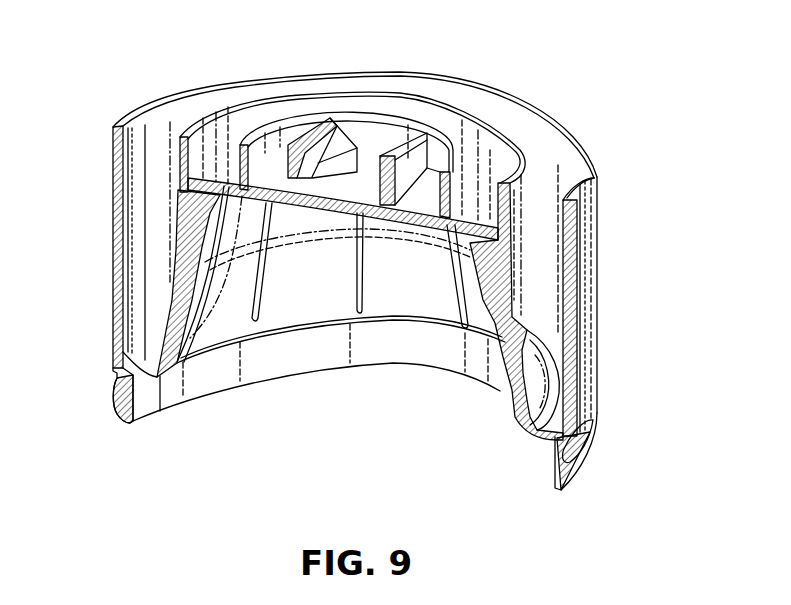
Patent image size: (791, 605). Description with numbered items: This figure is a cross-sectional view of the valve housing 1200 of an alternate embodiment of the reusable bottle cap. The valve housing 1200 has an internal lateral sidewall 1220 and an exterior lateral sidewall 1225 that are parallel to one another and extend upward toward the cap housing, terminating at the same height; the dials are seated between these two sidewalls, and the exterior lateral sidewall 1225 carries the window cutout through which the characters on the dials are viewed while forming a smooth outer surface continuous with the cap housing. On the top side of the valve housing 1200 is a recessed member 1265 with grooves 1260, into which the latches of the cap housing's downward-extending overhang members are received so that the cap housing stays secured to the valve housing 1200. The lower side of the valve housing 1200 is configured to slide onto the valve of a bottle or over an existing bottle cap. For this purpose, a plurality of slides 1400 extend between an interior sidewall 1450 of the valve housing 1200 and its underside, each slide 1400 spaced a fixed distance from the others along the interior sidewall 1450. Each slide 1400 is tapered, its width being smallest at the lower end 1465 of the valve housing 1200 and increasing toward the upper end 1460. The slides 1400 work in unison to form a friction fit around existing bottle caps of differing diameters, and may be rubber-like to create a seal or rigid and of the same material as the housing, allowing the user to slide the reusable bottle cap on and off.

The valve housing 1200 is at (637, 103).
The internal lateral sidewall 1220 is at (193, 200).
The exterior lateral sidewall 1225 is at (110, 234).
The grooves 1260 is at (383, 200).
The recessed member 1265 is at (343, 178).
The slides 1400 is at (267, 277).
The interior sidewall 1450 is at (210, 324).
The upper end 1460 is at (594, 172).
The lower end 1465 is at (583, 463).